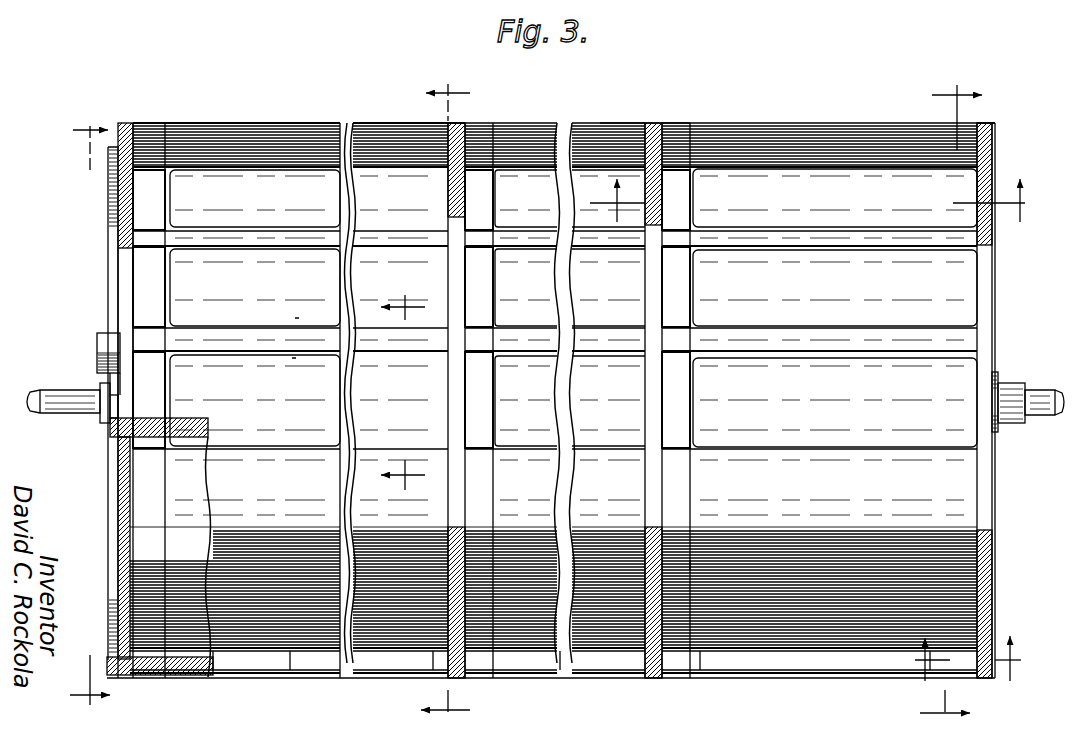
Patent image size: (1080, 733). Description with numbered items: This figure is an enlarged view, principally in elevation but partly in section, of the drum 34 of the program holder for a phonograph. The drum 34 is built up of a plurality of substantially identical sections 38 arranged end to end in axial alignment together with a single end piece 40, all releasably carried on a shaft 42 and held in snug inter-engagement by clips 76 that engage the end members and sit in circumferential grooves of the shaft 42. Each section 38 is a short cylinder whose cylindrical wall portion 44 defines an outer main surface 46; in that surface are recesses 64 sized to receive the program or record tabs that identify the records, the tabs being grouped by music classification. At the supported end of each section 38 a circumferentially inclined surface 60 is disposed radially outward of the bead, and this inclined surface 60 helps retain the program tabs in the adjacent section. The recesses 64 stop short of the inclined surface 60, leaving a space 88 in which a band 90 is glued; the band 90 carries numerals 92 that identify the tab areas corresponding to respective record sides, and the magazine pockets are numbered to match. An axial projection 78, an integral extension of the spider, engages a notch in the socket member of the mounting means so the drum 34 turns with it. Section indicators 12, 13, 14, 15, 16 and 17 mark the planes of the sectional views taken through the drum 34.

The drum 34 is at (790, 100).
The section 38 is at (323, 122).
The end piece 40 is at (999, 148).
The shaft 42 is at (55, 392).
The cylindrical wall portion 44 is at (245, 124).
The outer main surface 46 is at (388, 144).
The circumferentially inclined surface 60 is at (457, 122).
The recess 64 is at (297, 320).
The clip 76 is at (110, 424).
The axial projection 78 is at (105, 338).
The space 88 is at (692, 448).
The band 90 is at (690, 565).
The numerals 92 is at (683, 278).
The section line 12 is at (820, 200).
The section line 13 is at (968, 658).
The section line 14 is at (951, 403).
The section line 15 is at (90, 417).
The section line 16 is at (445, 401).
The section line 17 is at (403, 394).